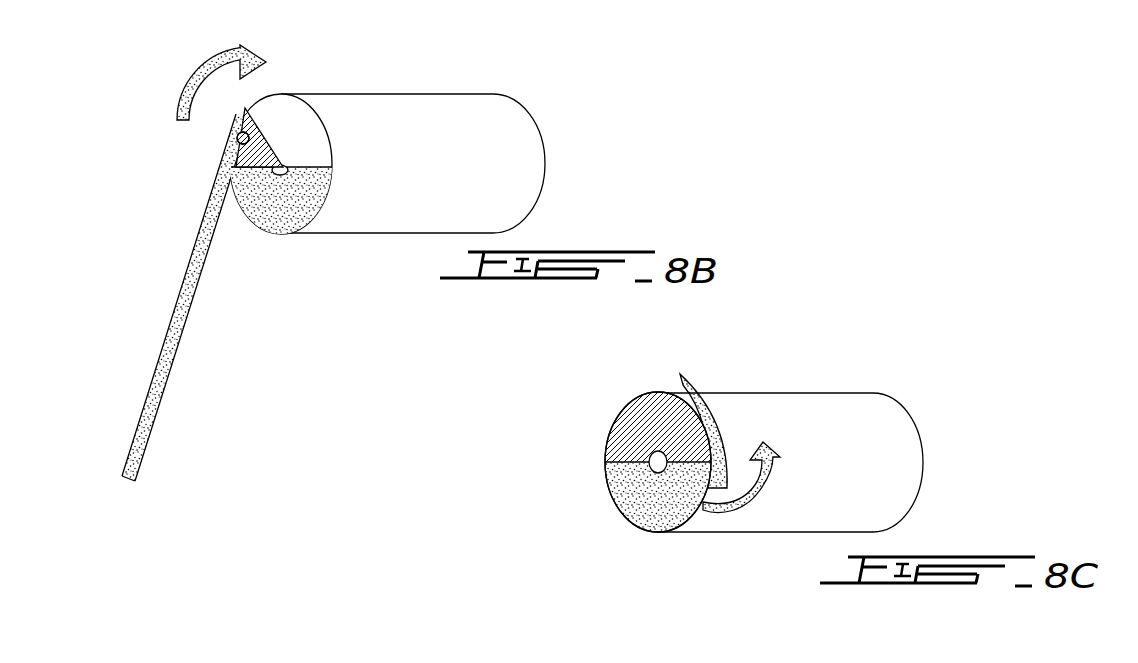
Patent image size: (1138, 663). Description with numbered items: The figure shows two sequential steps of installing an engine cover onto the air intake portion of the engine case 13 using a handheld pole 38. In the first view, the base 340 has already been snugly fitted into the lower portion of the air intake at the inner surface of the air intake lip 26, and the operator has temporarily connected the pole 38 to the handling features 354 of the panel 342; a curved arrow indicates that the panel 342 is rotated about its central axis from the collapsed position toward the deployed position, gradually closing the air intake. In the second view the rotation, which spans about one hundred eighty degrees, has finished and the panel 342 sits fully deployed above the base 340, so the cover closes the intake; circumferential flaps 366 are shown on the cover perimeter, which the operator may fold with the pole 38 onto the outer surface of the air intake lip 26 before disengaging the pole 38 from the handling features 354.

In FIG. 8B, the engine case 13 is at (468, 116).
In FIG. 8C, the engine case 13 is at (869, 422).
In FIG. 8B, the air intake lip 26 is at (331, 143).
In FIG. 8B, the pole 38 is at (167, 339).
In FIG. 8B, the base 340 is at (247, 220).
In FIG. 8C, the base 340 is at (610, 489).
In FIG. 8B, the panel 342 is at (260, 138).
In FIG. 8C, the panel 342 is at (638, 413).
In FIG. 8B, the handling features 354 is at (237, 136).
In FIG. 8C, the flaps 366 is at (727, 490).